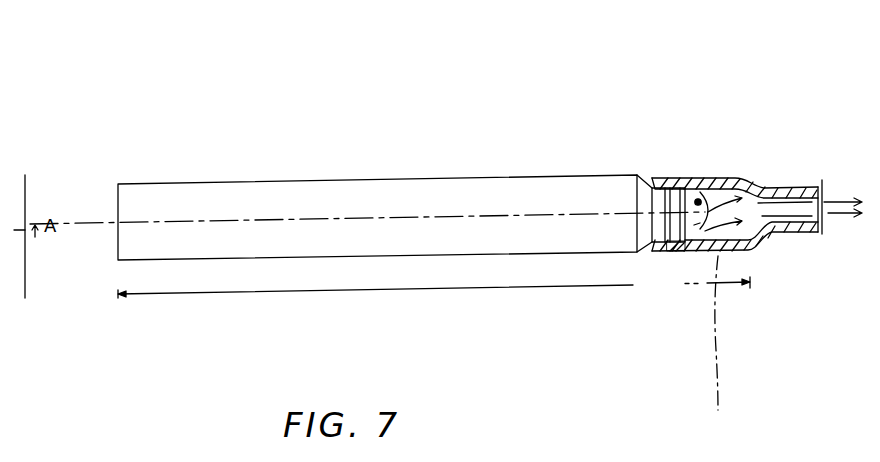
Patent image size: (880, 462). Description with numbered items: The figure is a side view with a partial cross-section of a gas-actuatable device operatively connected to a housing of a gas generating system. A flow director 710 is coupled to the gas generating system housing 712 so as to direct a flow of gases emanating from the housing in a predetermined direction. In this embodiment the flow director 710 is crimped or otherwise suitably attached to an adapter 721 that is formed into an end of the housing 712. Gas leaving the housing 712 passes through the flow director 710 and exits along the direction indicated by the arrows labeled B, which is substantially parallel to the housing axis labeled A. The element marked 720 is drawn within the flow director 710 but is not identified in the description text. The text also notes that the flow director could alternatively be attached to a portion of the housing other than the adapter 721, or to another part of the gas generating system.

The flow director 710 is at (720, 192).
The gas generating system housing 712 is at (300, 180).
The inlet aperture 720 is at (700, 199).
The adapter 721 is at (678, 247).